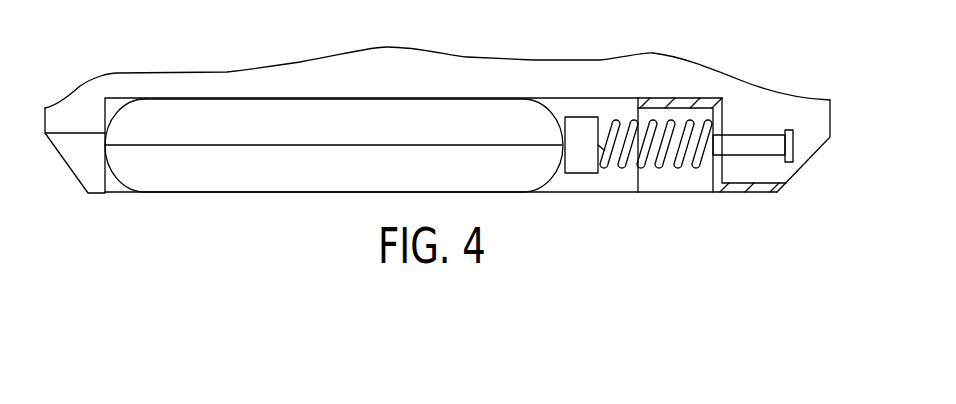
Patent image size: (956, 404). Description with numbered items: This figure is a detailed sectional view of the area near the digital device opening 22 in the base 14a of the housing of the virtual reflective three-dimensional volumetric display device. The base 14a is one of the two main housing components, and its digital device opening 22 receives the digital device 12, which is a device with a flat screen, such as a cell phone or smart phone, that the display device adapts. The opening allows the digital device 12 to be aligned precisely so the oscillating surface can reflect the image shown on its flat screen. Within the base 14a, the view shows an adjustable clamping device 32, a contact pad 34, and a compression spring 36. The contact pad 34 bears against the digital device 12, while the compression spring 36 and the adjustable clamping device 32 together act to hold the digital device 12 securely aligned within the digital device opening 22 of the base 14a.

The digital device 12 is at (265, 180).
The base 14a is at (687, 68).
The digital device opening 22 is at (113, 185).
The adjustable clamping device 32 is at (620, 207).
The contact pad 34 is at (582, 173).
The compression spring 36 is at (673, 168).